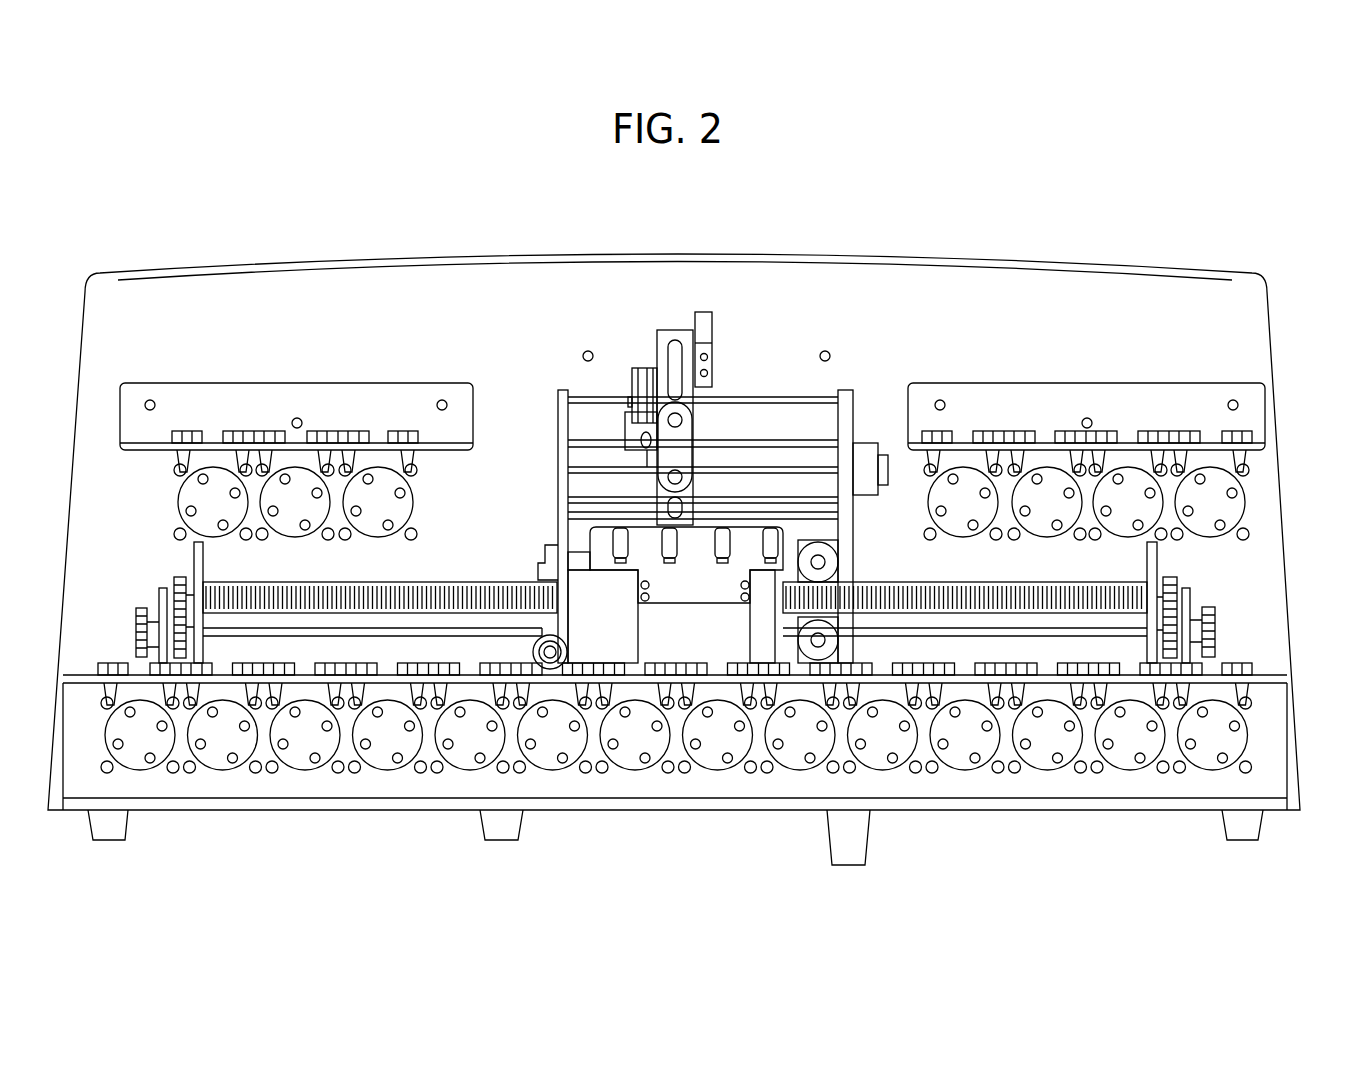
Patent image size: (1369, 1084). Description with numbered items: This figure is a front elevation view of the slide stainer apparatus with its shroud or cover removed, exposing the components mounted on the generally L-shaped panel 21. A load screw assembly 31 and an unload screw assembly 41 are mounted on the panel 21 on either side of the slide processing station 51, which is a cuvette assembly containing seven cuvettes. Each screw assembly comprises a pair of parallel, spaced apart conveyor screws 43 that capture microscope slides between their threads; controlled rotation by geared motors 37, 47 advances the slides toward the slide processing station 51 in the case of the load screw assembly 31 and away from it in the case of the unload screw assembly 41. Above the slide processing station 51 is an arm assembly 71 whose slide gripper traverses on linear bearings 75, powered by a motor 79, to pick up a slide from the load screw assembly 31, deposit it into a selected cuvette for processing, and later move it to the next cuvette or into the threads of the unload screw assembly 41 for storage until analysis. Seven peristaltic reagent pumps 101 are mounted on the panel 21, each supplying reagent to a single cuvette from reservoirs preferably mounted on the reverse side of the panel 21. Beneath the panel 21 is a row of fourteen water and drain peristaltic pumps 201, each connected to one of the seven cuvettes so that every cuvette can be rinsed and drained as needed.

The panel 21 is at (1182, 292).
The load screw assembly 31 is at (235, 572).
The geared motor 37 is at (180, 577).
The unload screw assembly 41 is at (1062, 560).
The lead screw 43 is at (1102, 582).
The geared motor 47 is at (1167, 635).
The slide processing station 51 is at (693, 580).
The arm assembly 71 is at (675, 330).
The linear bearings 75 is at (802, 453).
The motor 79 is at (868, 453).
The peristaltic reagent pump 101 is at (300, 497).
The water and drain peristaltic pumps 201 is at (1122, 753).